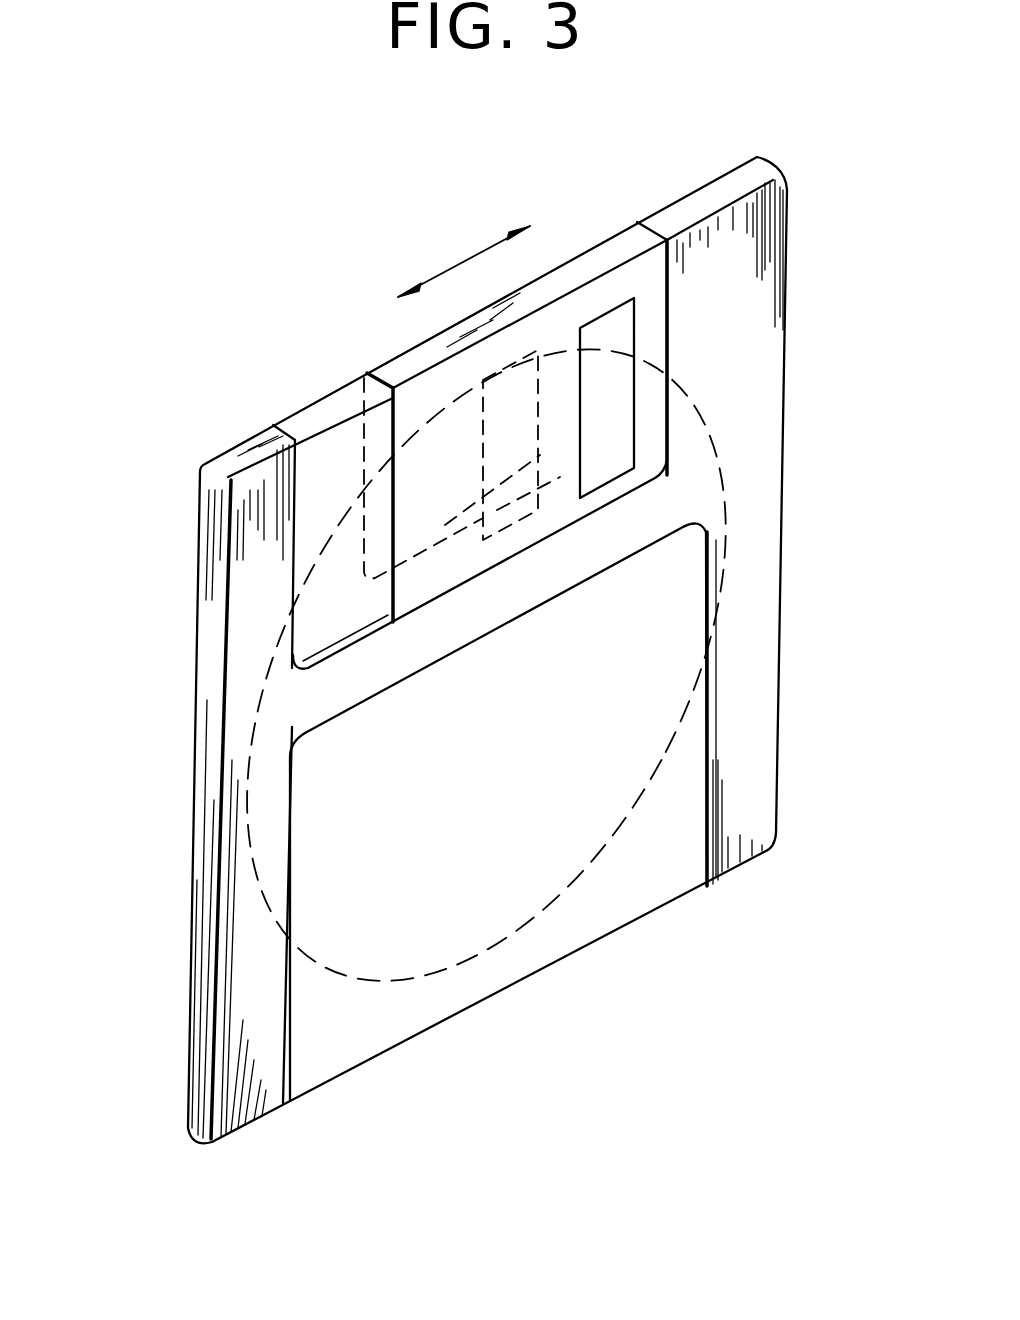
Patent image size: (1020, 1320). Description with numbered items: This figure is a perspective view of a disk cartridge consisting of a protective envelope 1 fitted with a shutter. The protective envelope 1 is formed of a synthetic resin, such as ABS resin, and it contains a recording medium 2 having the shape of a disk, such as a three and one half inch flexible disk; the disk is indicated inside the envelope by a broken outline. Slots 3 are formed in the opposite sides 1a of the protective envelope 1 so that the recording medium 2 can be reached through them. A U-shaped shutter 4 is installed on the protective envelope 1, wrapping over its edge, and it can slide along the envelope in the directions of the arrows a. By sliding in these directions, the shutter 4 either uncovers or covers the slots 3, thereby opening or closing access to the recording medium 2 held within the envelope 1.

The protective envelope 1 is at (532, 1012).
The opposite sides 1a is at (252, 624).
The recording medium 2 is at (591, 868).
The slots 3 is at (548, 390).
The U-shaped shutter 4 is at (422, 382).
The arrows a is at (453, 268).